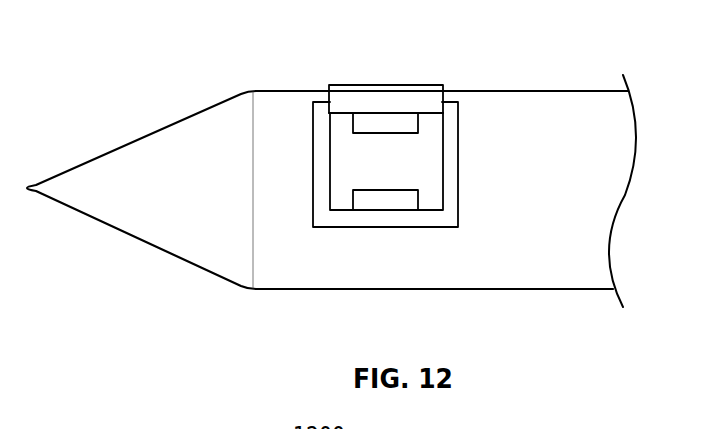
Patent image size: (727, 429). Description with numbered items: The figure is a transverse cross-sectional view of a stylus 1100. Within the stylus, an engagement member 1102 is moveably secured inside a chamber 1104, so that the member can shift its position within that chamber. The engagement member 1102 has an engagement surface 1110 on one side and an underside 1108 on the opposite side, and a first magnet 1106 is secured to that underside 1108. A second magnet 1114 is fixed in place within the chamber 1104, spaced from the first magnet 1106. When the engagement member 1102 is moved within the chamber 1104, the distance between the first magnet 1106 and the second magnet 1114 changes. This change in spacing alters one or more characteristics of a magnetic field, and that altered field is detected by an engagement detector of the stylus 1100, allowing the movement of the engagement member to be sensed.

The stylus 1100 is at (163, 70).
The engagement member 1102 is at (413, 85).
The chamber 1104 is at (450, 120).
The first magnet 1106 is at (392, 132).
The underside 1108 is at (343, 112).
The engagement surface 1110 is at (382, 85).
The second magnet 1114 is at (395, 202).